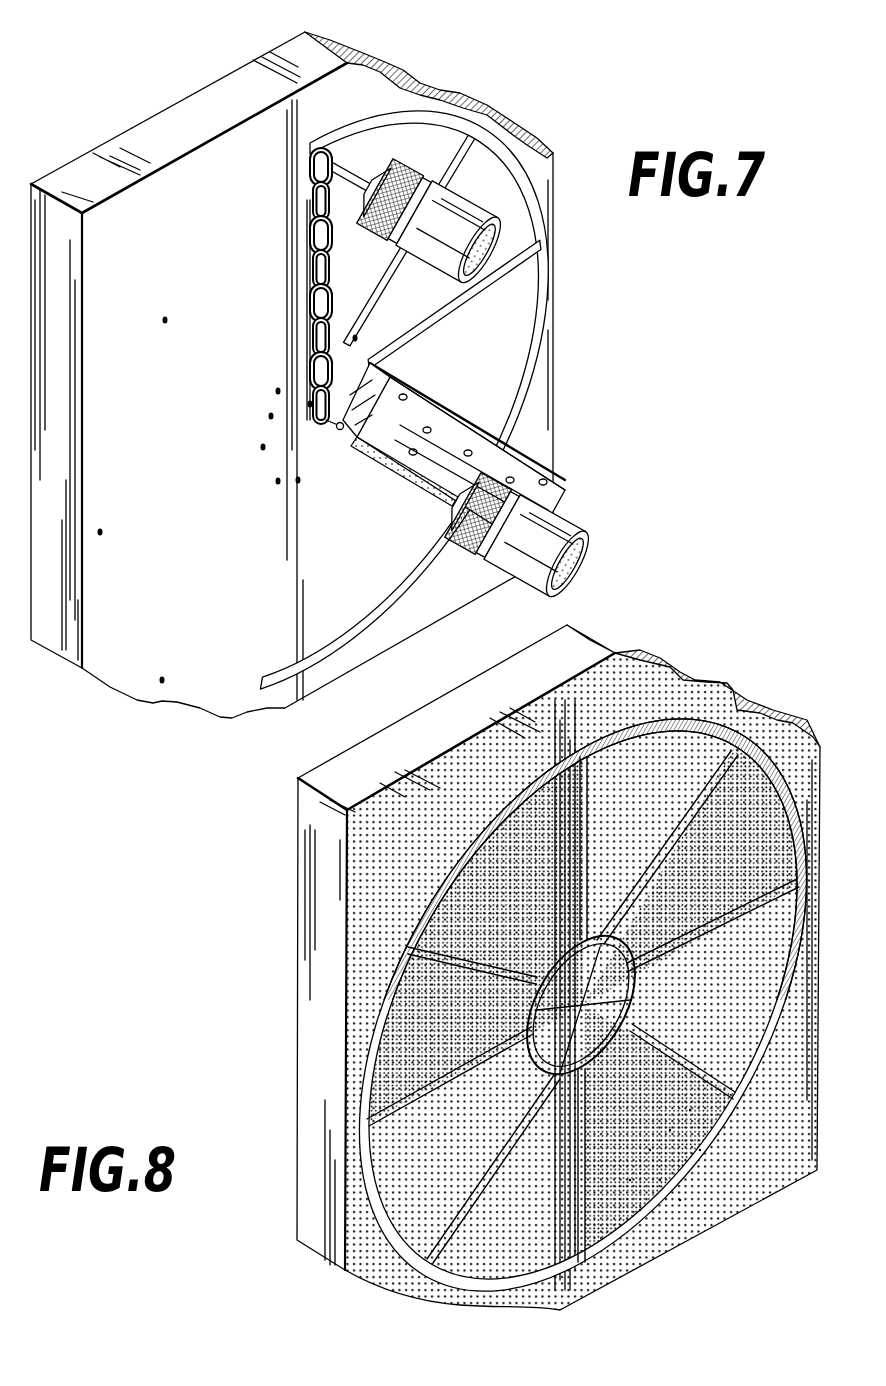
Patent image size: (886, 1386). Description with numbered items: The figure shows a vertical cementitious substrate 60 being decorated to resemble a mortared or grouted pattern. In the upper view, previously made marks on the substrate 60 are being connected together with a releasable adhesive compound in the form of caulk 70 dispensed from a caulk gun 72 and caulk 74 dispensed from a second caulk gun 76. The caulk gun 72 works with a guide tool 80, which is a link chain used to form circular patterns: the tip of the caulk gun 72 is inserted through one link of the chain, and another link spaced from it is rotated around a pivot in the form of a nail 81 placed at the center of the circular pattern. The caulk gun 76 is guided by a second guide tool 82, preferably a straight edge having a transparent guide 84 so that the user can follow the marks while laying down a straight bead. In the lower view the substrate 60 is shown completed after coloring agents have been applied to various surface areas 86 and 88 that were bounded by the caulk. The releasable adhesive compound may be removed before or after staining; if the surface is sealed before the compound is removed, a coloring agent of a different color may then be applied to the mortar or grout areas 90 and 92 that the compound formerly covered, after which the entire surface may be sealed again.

In FIG. 7, the vertical cementitious substrate 60 is at (140, 150).
In FIG. 8, the vertical cementitious substrate 60 is at (318, 920).
In FIG. 7, the caulk 70 is at (453, 117).
In FIG. 7, the caulk gun 72 is at (447, 243).
In FIG. 7, the caulk 74 is at (393, 470).
In FIG. 7, the caulk gun 76 is at (583, 530).
In FIG. 7, the guide tool 80 is at (305, 343).
In FIG. 7, the nail 81 is at (302, 437).
In FIG. 7, the guide tool 82 is at (438, 400).
In FIG. 7, the transparent guide 84 is at (345, 436).
In FIG. 8, the area 86 is at (403, 1157).
In FIG. 8, the area 88 is at (620, 1160).
In FIG. 8, the mortar or grout area 90 is at (750, 750).
In FIG. 8, the mortar or grout area 92 is at (585, 803).